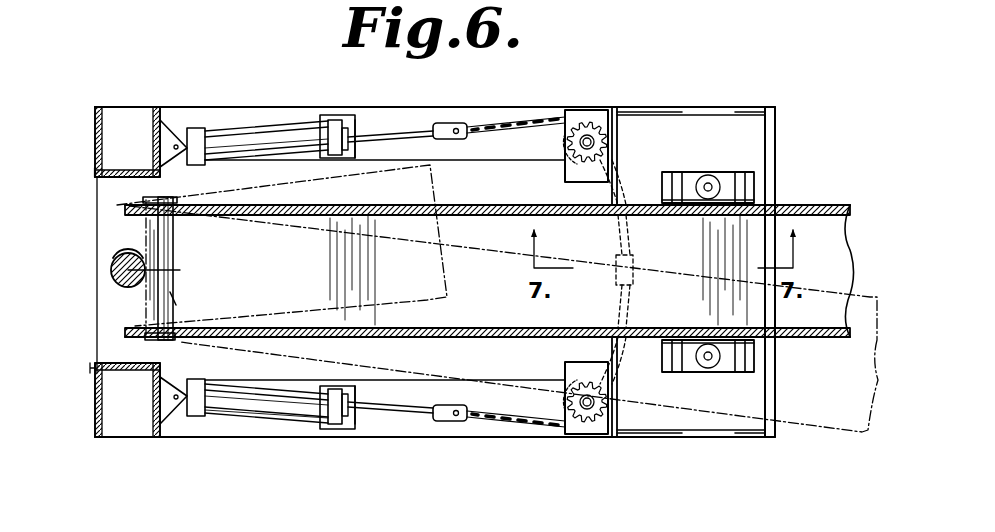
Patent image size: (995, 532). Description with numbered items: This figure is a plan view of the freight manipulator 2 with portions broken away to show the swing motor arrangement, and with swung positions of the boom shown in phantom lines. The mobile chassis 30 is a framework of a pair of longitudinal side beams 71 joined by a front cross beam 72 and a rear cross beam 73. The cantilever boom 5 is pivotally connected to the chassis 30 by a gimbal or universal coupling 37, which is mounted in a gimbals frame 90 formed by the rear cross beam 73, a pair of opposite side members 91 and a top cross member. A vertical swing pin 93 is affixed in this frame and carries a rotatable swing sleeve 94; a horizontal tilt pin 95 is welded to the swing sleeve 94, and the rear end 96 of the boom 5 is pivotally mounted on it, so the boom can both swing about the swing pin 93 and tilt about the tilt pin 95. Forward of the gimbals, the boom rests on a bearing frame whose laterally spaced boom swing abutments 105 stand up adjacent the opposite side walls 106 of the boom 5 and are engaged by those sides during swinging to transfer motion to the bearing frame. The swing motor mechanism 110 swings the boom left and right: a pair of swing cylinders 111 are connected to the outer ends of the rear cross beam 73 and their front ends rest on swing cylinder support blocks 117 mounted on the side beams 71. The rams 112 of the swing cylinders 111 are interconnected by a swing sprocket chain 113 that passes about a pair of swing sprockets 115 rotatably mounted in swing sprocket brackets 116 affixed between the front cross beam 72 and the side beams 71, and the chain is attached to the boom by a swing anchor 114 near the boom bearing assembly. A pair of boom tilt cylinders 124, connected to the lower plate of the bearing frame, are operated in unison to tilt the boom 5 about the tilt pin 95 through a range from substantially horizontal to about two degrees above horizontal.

The freight manipulator 2 is at (277, 63).
The boom assembly 5 is at (487, 204).
The mobile chassis 30 is at (92, 105).
The gimbal or universal coupling 37 is at (129, 252).
The longitudinal side beams 71 is at (388, 113).
The front cross beam 72 is at (776, 134).
The rear cross beam 73 is at (112, 357).
The gimbals frame 90 is at (92, 166).
The side members 91 is at (136, 172).
The swing pin 93 is at (176, 270).
The swing sleeve 94 is at (111, 277).
The tilt pin 95 is at (178, 300).
The rear end of the boom 96 is at (125, 206).
The boom swing abutments 105 is at (668, 173).
The side walls of the boom 106 is at (837, 206).
The swing motor mechanism 110 is at (267, 418).
The swing cylinders 111 is at (218, 125).
The rams 112 is at (404, 133).
The swing sprocket chain 113 is at (503, 118).
The swing anchor 114 is at (633, 262).
The swing sprockets 115 is at (565, 179).
The swing sprocket brackets 116 is at (598, 122).
The swing cylinder support blocks 117 is at (332, 115).
The boom tilt cylinders 124 is at (708, 175).